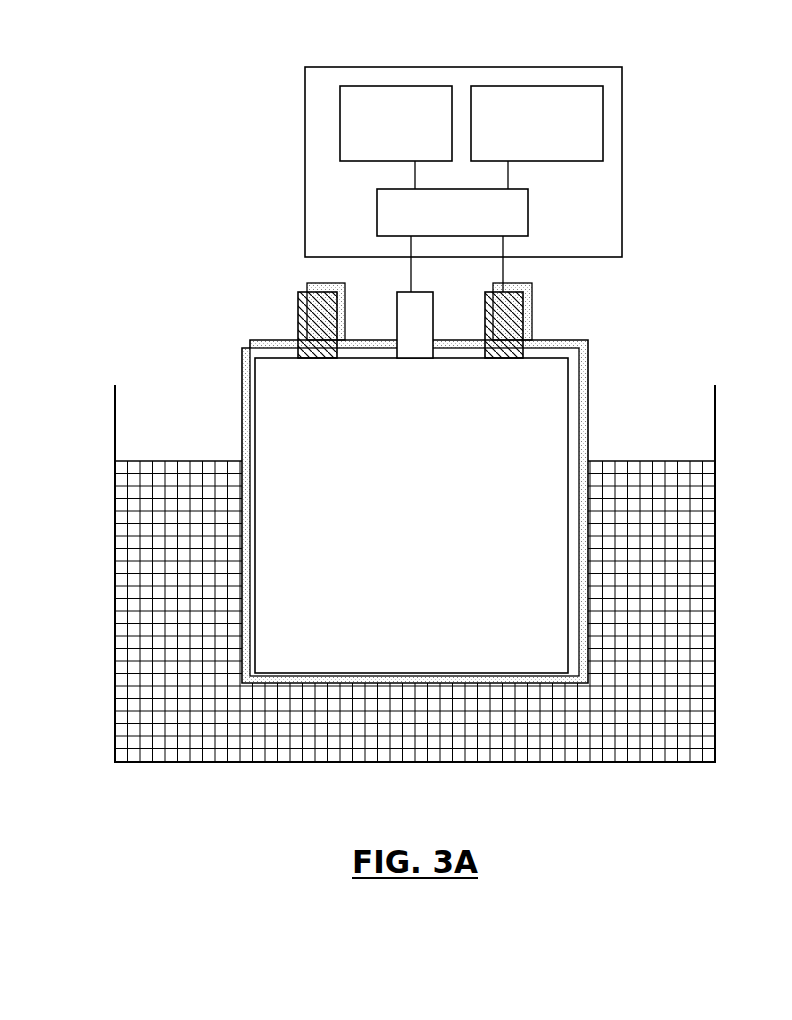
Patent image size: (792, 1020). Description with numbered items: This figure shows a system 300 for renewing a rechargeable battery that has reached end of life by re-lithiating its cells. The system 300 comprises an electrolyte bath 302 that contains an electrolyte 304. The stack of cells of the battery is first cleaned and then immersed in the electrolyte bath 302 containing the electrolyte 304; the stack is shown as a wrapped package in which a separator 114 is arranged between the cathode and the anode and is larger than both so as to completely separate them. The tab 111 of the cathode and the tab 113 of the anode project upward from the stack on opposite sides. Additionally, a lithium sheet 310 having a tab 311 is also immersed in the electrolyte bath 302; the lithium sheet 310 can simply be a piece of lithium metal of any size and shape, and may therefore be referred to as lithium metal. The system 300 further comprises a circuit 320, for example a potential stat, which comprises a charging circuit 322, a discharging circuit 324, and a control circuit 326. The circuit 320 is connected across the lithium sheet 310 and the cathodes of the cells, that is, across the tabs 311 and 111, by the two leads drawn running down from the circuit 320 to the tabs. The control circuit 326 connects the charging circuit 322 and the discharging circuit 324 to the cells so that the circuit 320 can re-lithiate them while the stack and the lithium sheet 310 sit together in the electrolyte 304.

The system 300 is at (678, 161).
The electrolyte bath 302 is at (718, 413).
The electrolyte 304 is at (688, 622).
The lithium sheet 310 is at (556, 420).
The tab 311 is at (410, 311).
The circuit 320 is at (465, 67).
The charging circuit 322 is at (340, 100).
The discharging circuit 324 is at (547, 162).
The control circuit 326 is at (377, 213).
The tab 111 is at (532, 320).
The tab 113 is at (300, 318).
The separator 114 is at (588, 378).